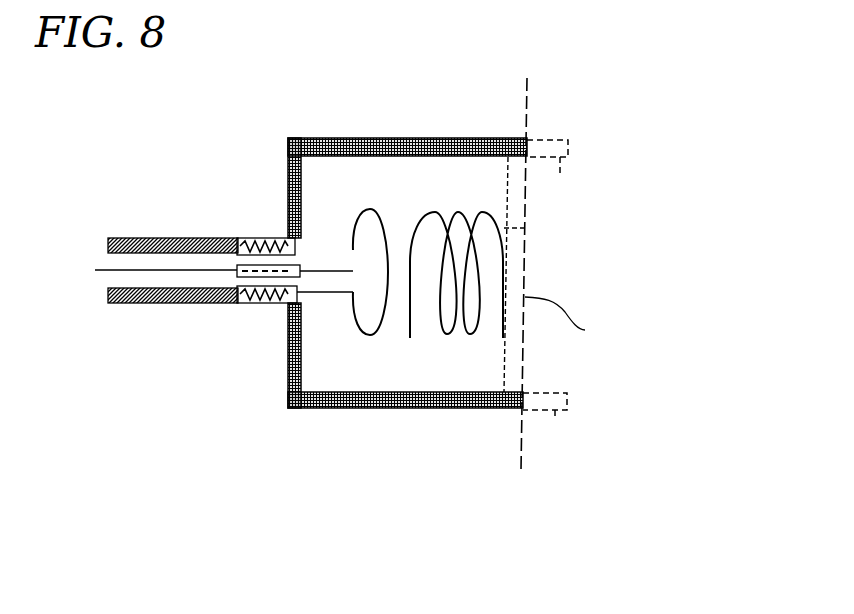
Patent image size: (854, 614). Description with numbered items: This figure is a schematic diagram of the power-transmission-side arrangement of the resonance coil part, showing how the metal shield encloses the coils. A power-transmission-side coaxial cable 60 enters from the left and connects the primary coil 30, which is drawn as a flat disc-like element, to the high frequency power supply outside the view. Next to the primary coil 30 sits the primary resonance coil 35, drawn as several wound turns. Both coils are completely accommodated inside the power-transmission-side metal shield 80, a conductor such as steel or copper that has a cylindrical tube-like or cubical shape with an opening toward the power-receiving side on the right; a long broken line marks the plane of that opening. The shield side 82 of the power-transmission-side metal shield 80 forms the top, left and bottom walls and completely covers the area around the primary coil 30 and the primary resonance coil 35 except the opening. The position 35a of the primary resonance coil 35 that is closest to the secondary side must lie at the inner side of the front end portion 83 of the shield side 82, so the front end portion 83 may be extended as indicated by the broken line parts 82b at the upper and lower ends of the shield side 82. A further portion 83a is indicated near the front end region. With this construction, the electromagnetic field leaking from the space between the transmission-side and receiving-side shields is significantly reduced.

The primary coil 30 is at (353, 313).
The primary resonance coil 35 is at (447, 337).
The position of the primary resonance coil closest to the secondary side 35a is at (527, 228).
The power-transmission-side coaxial cable 60 is at (180, 222).
The power-transmission-side metal shield 80 is at (540, 106).
The shield side 82 is at (406, 138).
The broken line parts 82b is at (560, 175).
The front end portion 83 is at (528, 157).
The retaining member portion 83a is at (585, 330).